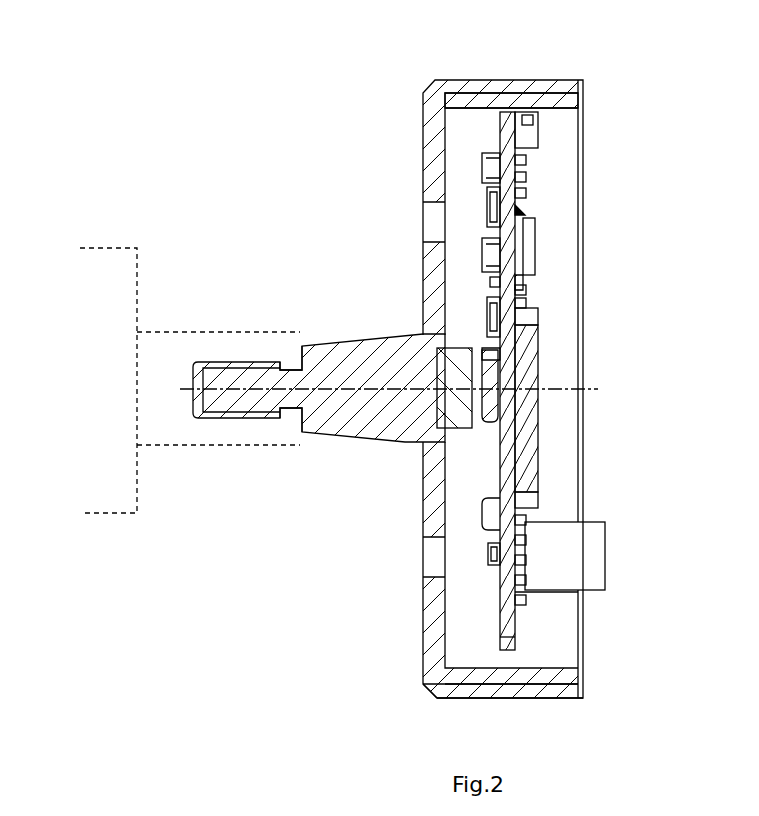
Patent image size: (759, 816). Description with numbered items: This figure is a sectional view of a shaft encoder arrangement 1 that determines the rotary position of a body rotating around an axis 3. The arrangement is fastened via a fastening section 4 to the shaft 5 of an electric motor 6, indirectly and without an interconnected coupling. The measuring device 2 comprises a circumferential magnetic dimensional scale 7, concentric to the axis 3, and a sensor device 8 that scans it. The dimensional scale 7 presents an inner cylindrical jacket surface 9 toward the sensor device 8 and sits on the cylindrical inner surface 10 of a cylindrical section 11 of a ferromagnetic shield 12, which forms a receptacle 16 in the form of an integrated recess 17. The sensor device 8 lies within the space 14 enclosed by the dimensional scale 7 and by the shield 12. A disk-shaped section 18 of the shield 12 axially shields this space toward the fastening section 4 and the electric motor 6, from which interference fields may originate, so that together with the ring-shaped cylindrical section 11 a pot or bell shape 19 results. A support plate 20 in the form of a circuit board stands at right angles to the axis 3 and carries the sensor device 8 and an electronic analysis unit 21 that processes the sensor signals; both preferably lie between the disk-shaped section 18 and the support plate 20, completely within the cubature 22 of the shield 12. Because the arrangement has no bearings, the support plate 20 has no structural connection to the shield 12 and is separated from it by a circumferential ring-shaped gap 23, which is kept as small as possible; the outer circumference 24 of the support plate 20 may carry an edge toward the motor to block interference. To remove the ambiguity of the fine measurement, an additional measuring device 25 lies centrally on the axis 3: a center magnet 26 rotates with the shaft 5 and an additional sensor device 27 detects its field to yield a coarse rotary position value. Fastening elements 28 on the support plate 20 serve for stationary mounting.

The shaft encoder arrangement 1 is at (660, 56).
The measuring device 2 is at (555, 120).
The axis 3 is at (593, 388).
The fastening section 4 is at (262, 320).
The shaft 5 is at (283, 340).
The electric motor 6 is at (137, 257).
The magnetic dimensional scale 7 is at (548, 100).
The sensor device 8 is at (536, 145).
The inner cylindrical jacket surface 9 is at (563, 670).
The inner surface 10 is at (512, 612).
The cylindrical section 11 is at (566, 692).
The shield 12 is at (412, 66).
The space 14 is at (566, 228).
The receptacle 16 is at (478, 631).
The recess 17 is at (568, 487).
The disk-shaped section 18 is at (425, 612).
The pot or bell shape 19 is at (398, 705).
The support plate 20 is at (540, 440).
The electronic analysis unit 21 is at (448, 192).
The cubature 22 is at (566, 304).
The gap 23 is at (432, 280).
The outer circumference 24 is at (513, 95).
The additional measuring device 25 is at (446, 467).
The center magnet 26 is at (436, 349).
The additional sensor device 27 is at (481, 349).
The fastening elements 28 is at (607, 590).